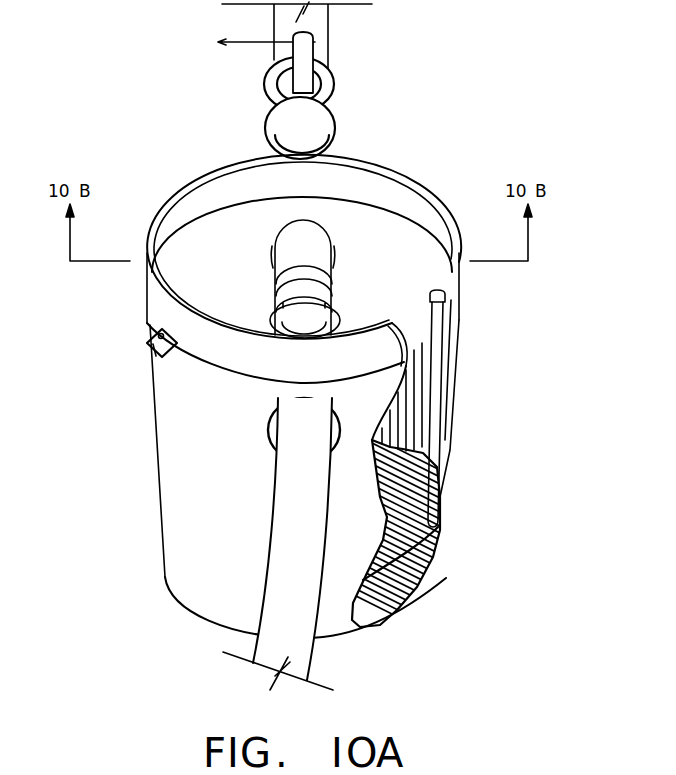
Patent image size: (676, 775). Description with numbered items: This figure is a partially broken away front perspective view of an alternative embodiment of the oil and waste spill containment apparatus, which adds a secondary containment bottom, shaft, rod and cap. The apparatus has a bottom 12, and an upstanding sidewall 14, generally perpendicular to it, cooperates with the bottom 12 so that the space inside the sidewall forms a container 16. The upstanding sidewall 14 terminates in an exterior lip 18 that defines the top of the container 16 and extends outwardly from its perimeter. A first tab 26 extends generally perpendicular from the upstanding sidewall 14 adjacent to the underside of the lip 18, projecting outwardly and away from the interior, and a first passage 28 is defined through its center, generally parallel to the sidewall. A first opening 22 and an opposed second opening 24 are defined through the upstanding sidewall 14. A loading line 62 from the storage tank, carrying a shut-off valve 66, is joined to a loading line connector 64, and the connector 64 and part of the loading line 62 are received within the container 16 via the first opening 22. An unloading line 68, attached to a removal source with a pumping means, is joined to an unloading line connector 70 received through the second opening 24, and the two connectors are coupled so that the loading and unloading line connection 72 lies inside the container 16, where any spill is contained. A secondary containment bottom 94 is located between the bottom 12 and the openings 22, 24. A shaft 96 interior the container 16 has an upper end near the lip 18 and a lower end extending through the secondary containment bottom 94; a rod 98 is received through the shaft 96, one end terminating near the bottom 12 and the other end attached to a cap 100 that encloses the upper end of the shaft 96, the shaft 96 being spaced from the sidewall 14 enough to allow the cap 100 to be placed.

The bottom 12 is at (412, 608).
The upstanding sidewall 14 is at (160, 512).
The container 16 is at (228, 503).
The exterior lip 18 is at (228, 368).
The first opening 22 is at (328, 224).
The second opening 24 is at (268, 419).
The first tab 26 is at (150, 350).
The first passage 28 is at (150, 337).
The loading line 62 is at (332, 23).
The loading line connector 64 is at (270, 295).
The shut-off valve 66 is at (336, 108).
The unloading line 68 is at (268, 556).
The unloading line connector 70 is at (335, 303).
The loading and unloading line connection 72 is at (273, 312).
The secondary containment bottom 94 is at (384, 531).
The shaft 96 is at (433, 402).
The rod 98 is at (432, 565).
The cap 100 is at (430, 292).